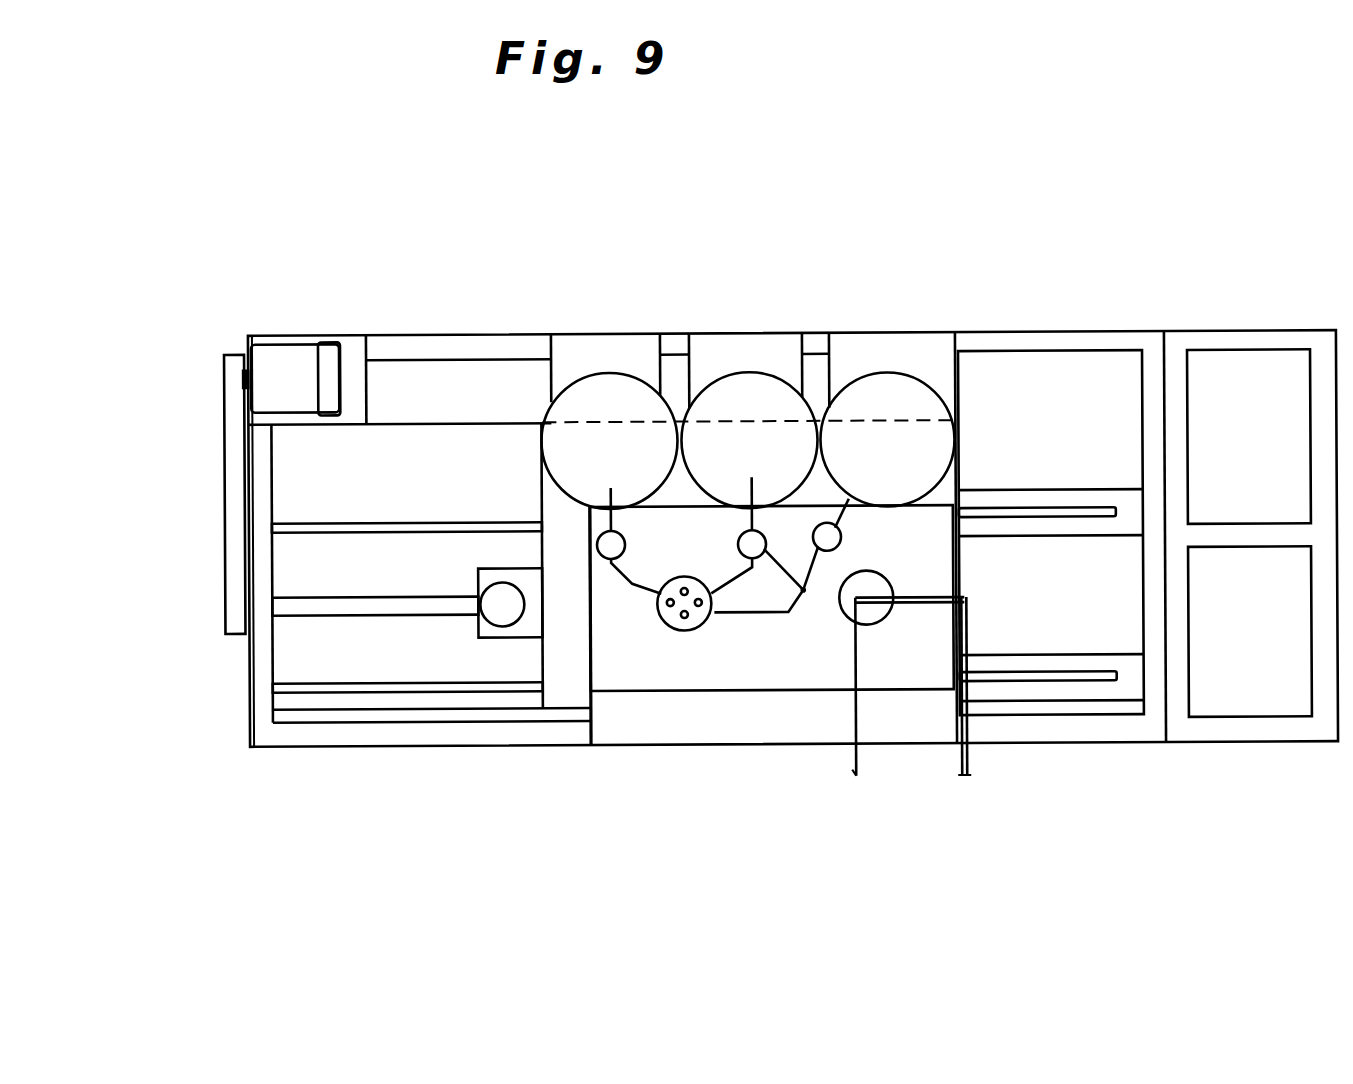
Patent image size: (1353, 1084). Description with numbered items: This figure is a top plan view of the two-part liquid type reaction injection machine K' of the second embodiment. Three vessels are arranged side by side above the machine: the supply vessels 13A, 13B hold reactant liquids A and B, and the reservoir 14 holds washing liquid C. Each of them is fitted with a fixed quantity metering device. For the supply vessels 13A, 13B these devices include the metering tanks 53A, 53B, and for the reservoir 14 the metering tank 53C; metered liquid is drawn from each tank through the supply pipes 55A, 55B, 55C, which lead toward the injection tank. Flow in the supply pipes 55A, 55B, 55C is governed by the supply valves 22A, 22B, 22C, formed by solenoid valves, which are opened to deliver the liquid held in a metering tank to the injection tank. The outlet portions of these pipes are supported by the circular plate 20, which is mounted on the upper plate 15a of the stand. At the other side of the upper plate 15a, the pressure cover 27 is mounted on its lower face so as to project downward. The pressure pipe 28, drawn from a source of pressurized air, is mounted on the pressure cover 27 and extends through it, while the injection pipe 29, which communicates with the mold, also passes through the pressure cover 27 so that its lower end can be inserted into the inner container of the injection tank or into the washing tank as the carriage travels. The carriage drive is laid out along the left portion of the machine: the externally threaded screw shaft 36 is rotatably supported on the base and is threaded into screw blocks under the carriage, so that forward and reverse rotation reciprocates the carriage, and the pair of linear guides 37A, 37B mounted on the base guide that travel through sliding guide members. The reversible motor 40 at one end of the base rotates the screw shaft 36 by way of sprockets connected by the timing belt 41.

The two-part liquid type reaction injection machine K' is at (792, 456).
The reversible motor 40 is at (283, 354).
The timing belt 41 is at (232, 400).
The linear guide 37A is at (333, 518).
The screw shaft 36 is at (333, 599).
The linear guide 37B is at (333, 686).
The supply vessel 13A is at (604, 386).
The supply vessel 13B is at (752, 386).
The reservoir 14 is at (906, 386).
The metering tank 53A is at (617, 498).
The supply pipe 55A is at (643, 582).
The supply pipe 55B is at (720, 498).
The metering tank 53C is at (854, 506).
The metering tank 53B is at (803, 592).
The supply pipe 55C is at (792, 614).
The circular plate 20 is at (660, 618).
The supply valve 22A is at (672, 608).
The supply valve 22B is at (702, 605).
The supply valve 22C is at (686, 618).
The pressure cover 27 is at (871, 580).
The pressure pipe 28 is at (857, 712).
The upper plate 15a is at (921, 661).
The injection pipe 29 is at (968, 626).